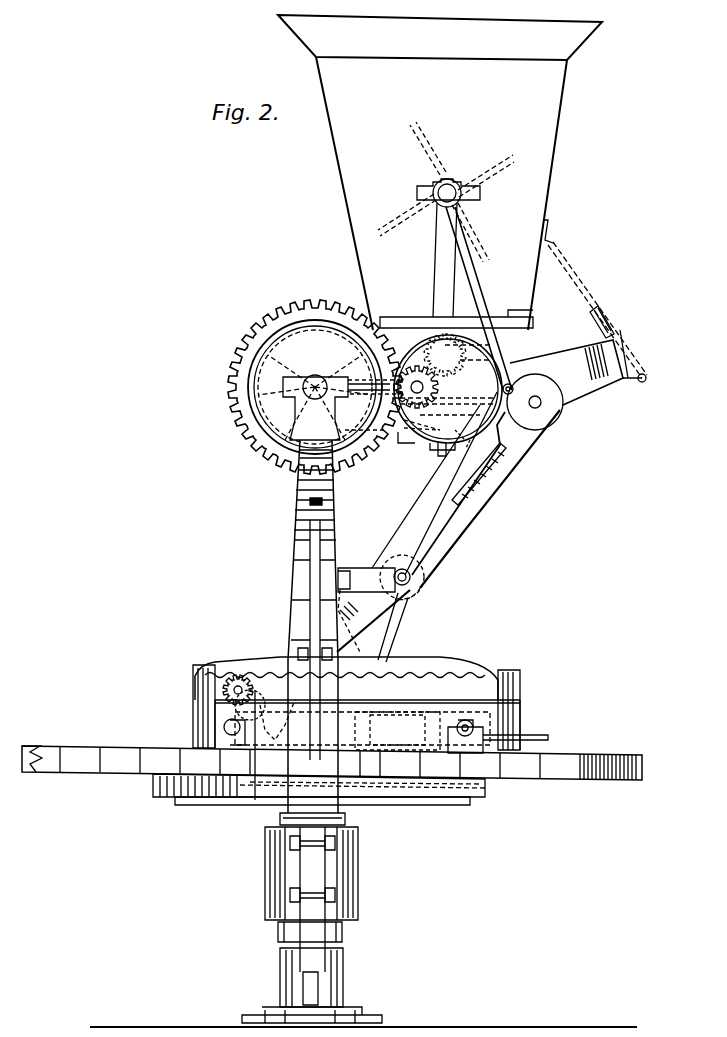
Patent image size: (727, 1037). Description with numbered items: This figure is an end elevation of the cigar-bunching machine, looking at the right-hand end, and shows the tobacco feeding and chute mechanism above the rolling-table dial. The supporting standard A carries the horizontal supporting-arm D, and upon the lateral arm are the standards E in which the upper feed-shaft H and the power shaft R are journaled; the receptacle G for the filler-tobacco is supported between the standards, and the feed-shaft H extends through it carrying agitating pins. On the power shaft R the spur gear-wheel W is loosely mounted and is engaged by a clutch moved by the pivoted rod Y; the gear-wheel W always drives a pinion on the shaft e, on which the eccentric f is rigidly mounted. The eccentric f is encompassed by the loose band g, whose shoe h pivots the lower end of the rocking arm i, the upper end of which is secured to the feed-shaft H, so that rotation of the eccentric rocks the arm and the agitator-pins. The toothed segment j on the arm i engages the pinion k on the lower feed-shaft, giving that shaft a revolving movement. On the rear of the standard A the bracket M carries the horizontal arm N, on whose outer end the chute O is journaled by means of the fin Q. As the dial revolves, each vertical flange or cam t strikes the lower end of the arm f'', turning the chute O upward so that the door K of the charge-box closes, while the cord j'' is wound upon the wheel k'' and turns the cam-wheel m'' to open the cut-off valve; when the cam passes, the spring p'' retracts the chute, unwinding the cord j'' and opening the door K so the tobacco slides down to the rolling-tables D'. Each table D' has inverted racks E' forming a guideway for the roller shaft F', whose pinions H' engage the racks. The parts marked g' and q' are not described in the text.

The receptacle G is at (440, 172).
The upper feed-shaft H is at (446, 192).
The rocking arm i is at (480, 300).
The toothed segment j is at (456, 318).
The spring p'' is at (597, 310).
The spur gear-wheel W is at (315, 386).
The power shaft R is at (315, 407).
The shaft g' is at (376, 364).
The shaft e is at (448, 389).
The eccentric f is at (447, 382).
The loose band g is at (404, 447).
The shoe h is at (512, 395).
The cam-wheel m'' is at (553, 402).
The cord j'' is at (529, 459).
The chute O is at (434, 483).
The door K is at (475, 467).
The fin Q is at (414, 562).
The bracket M is at (366, 573).
The horizontal arm N is at (414, 581).
The wheel k'' is at (420, 613).
The arm f'' is at (373, 626).
The supporting standard A is at (304, 626).
The pivoted rod Y is at (315, 640).
The inverted racks E' is at (356, 698).
The pinions H' is at (259, 737).
The standards E is at (230, 728).
The vertical flange t is at (397, 730).
The rolling-tables D' is at (399, 731).
The shaft F' is at (498, 732).
The pinion k is at (332, 758).
The lower plate q' is at (319, 796).
The horizontal supporting-arm D is at (312, 918).